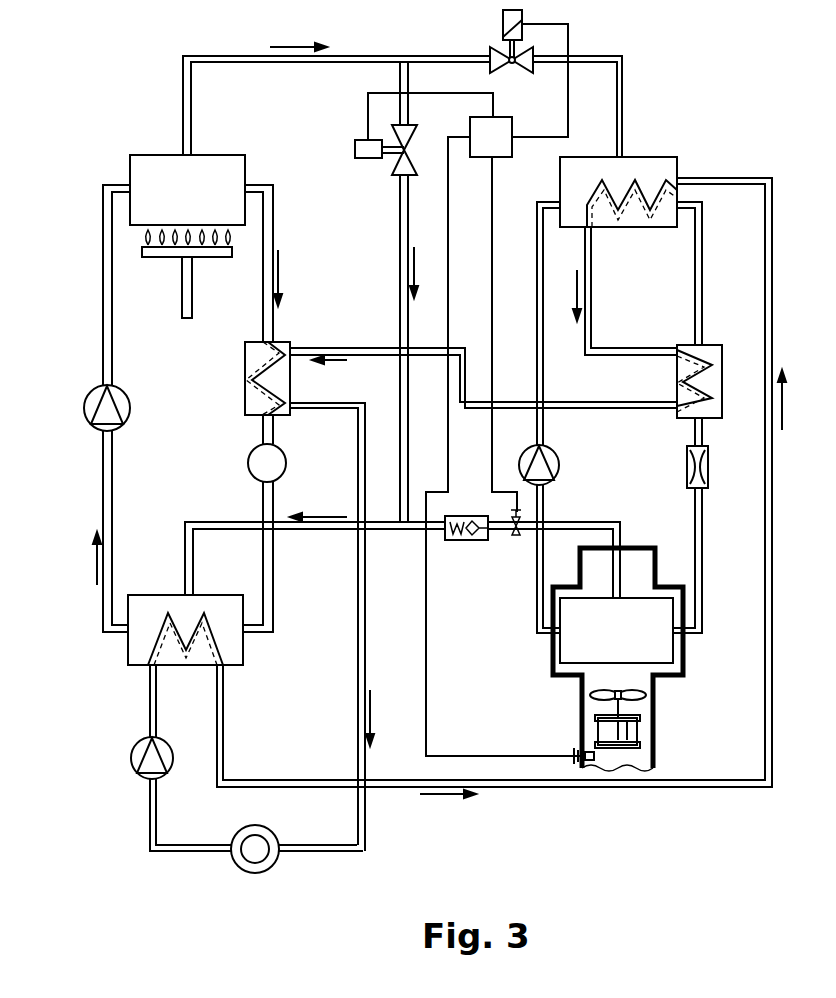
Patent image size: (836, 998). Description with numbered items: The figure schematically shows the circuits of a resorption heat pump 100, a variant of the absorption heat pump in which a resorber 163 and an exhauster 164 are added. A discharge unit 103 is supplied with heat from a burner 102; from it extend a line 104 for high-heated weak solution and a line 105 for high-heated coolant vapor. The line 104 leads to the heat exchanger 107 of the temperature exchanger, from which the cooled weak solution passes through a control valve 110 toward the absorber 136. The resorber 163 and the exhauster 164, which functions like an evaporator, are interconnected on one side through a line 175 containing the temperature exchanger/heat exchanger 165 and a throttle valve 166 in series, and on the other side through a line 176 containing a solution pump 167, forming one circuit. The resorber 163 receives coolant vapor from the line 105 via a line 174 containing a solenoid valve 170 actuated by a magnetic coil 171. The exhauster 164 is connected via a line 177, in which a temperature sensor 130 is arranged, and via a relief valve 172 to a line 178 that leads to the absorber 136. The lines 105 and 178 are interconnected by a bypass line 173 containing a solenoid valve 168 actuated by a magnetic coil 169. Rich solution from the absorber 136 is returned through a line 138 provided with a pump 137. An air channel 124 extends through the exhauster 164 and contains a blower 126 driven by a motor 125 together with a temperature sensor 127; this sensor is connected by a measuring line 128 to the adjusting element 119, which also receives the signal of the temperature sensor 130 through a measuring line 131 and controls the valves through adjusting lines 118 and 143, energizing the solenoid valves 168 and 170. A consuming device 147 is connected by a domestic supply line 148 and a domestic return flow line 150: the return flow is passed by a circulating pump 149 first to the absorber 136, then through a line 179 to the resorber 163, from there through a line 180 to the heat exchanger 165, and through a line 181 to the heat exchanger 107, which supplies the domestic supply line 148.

The resorption heat pump 100 is at (485, 677).
The burner 102 is at (159, 258).
The discharge unit 103 is at (202, 202).
The line 104 is at (263, 185).
The line 105 is at (238, 55).
The heat exchanger 107 is at (250, 380).
The control valve 110 is at (248, 469).
The adjusting line 118 is at (568, 113).
The adjusting element 119 is at (498, 160).
The air channel 124 is at (640, 556).
The motor 125 is at (637, 735).
The blower 126 is at (655, 697).
The temperature sensor 127 is at (590, 765).
The measuring line 128 is at (482, 755).
The temperature sensor 130 is at (515, 540).
The measuring line 131 is at (492, 279).
The absorber 136 is at (147, 602).
The pump 137 is at (113, 425).
The line 138 is at (112, 355).
The adjusting line 143 is at (430, 92).
The consuming device 147 is at (266, 866).
The domestic supply line 148 is at (366, 828).
The circulating pump 149 is at (155, 773).
The domestic return flow line 150 is at (148, 822).
The resorber 163 is at (662, 161).
The exhauster 164 is at (632, 644).
The temperature exchanger/heat exchanger 165 is at (720, 346).
The throttle valve 166 is at (708, 472).
The solution pump 167 is at (560, 461).
The solenoid valve 168 is at (397, 174).
The magnetic coil 169 is at (363, 140).
The solenoid valve 170 is at (492, 48).
The magnetic coil 171 is at (522, 18).
The relief valve 172 is at (475, 542).
The bypass line 173 is at (399, 258).
The line 174 is at (612, 57).
The line 175 is at (703, 274).
The line 176 is at (543, 383).
The line 177 is at (590, 523).
The line 178 is at (312, 530).
The line 179 is at (714, 788).
The line 180 is at (591, 273).
The line 181 is at (352, 345).